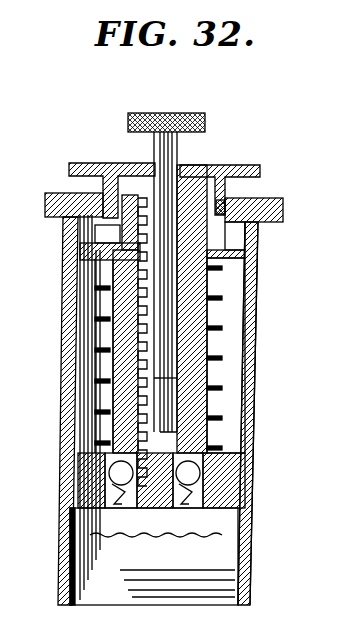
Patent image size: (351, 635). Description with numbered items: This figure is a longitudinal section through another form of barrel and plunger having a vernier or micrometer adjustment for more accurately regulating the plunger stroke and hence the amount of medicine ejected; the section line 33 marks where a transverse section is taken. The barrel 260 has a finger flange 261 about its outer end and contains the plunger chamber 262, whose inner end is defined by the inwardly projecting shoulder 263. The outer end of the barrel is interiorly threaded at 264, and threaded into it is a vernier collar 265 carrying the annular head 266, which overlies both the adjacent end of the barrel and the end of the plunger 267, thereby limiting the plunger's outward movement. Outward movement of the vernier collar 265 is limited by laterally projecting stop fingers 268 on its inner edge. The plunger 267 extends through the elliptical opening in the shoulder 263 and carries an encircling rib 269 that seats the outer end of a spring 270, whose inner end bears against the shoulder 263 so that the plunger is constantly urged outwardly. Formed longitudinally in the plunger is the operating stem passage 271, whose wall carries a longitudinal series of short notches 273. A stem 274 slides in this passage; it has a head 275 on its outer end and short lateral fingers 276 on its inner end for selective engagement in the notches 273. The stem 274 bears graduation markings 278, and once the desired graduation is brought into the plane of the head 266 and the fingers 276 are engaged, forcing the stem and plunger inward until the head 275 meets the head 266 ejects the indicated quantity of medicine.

The section line 33- 33 is at (70, 330).
The barrel 260 is at (252, 393).
The finger flange 261 is at (284, 208).
The plunger chamber 262 is at (222, 407).
The shoulder 263 is at (78, 482).
The interior threads 264 is at (228, 206).
The vernier collar 265 is at (226, 198).
The annular head 266 is at (130, 164).
The plunger 267 is at (112, 421).
The stop fingers 268 is at (236, 227).
The encircling rib 269 is at (247, 273).
The spring 270 is at (215, 358).
The operating stem passage 271 is at (190, 170).
The notches 273 is at (112, 241).
The stem 274 is at (168, 379).
The head 275 is at (196, 118).
The lugs or fingers 276 is at (125, 331).
The graduation markings 278 is at (179, 152).